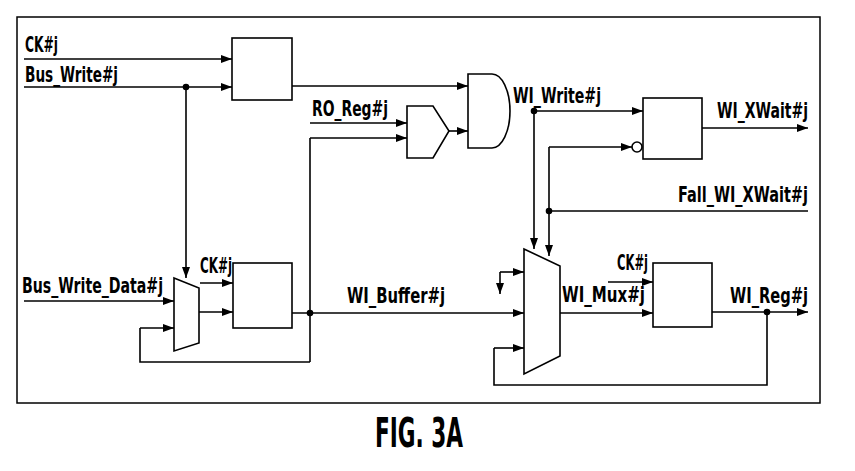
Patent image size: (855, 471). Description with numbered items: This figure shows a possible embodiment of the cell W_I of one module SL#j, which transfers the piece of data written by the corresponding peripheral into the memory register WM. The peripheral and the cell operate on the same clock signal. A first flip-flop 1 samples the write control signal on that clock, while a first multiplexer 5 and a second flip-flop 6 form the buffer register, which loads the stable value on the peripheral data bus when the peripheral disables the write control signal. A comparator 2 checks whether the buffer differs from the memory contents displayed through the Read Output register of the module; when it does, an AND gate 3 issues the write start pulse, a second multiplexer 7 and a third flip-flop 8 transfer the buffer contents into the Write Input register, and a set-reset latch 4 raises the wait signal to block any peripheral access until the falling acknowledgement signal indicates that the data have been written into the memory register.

The first flip-flop 1 is at (262, 69).
The comparator 2 is at (419, 118).
The AND gate 3 is at (534, 111).
The set-reset latch 4 is at (667, 128).
The first multiplexer 5 is at (186, 314).
The second flip-flop 6 is at (262, 296).
The second multiplexer 7 is at (542, 311).
The third flip-flop 8 is at (682, 294).